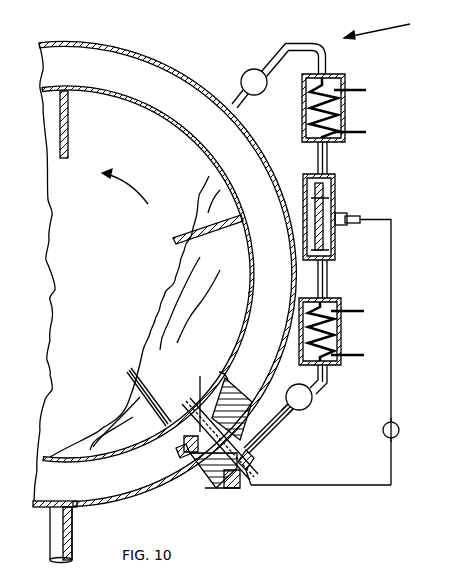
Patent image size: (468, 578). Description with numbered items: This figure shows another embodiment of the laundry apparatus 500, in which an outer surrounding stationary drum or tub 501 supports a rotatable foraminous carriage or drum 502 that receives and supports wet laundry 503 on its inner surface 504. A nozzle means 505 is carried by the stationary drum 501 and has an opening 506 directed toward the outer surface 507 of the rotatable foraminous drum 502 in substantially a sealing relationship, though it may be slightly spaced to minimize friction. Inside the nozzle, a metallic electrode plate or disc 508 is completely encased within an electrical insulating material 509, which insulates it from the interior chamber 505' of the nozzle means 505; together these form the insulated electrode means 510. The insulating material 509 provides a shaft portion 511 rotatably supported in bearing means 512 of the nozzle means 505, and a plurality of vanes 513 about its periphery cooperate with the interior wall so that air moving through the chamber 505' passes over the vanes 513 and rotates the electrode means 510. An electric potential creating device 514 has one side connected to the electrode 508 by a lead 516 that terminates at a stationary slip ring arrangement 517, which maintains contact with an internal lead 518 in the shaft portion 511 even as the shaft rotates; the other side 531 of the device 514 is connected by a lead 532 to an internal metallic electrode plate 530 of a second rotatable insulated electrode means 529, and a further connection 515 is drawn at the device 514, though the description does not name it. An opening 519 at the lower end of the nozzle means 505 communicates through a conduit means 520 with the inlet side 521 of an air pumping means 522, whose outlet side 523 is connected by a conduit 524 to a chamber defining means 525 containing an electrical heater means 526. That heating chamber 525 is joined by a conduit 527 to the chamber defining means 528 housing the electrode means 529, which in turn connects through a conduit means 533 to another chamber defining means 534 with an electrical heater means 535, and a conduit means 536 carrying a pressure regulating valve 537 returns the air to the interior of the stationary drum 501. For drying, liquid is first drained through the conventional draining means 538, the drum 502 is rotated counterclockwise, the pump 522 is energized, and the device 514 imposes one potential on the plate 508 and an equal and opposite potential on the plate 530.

The laundry apparatus 500 is at (377, 28).
The stationary drum 501 is at (92, 43).
The rotatable foraminous drum 502 is at (111, 92).
The wet laundry 503 is at (186, 268).
The inner surface 504 is at (205, 156).
The nozzle means 505 is at (240, 398).
The interior chamber 505' is at (190, 486).
The opening 506 is at (219, 372).
The outer surface 507 is at (248, 293).
The electrode plate 508 is at (192, 465).
The electrical insulating material 509 is at (200, 385).
The insulated electrode means 510 is at (183, 402).
The shaft portion 511 is at (216, 480).
The bearing means 512 is at (210, 492).
The vanes 513 is at (185, 447).
The electric potential creating device 514 is at (400, 430).
The wire 515 is at (398, 436).
The lead 516 is at (305, 486).
The stationary slip ring arrangement 517 is at (252, 473).
The internal lead 518 is at (256, 460).
The opening 519 is at (210, 490).
The conduit means 520 is at (285, 425).
The inlet side 521 is at (292, 412).
The air pumping means 522 is at (307, 406).
The outlet side 523 is at (314, 392).
The conduit 524 is at (330, 377).
The chamber defining means 525 is at (343, 336).
The electrical heater means 526 is at (332, 306).
The conduit 527 is at (329, 277).
The chamber defining means 528 is at (337, 188).
The rotatable insulated electrode means 529 is at (332, 203).
The electrode plate 530 is at (311, 196).
The other side 531 is at (395, 425).
The lead 532 is at (393, 258).
The conduit means 533 is at (330, 162).
The chamber defining means 534 is at (346, 118).
The electrical heater means 535 is at (333, 80).
The conduit means 536 is at (264, 50).
The pressure regulating valve 537 is at (245, 72).
The draining means 538 is at (70, 530).